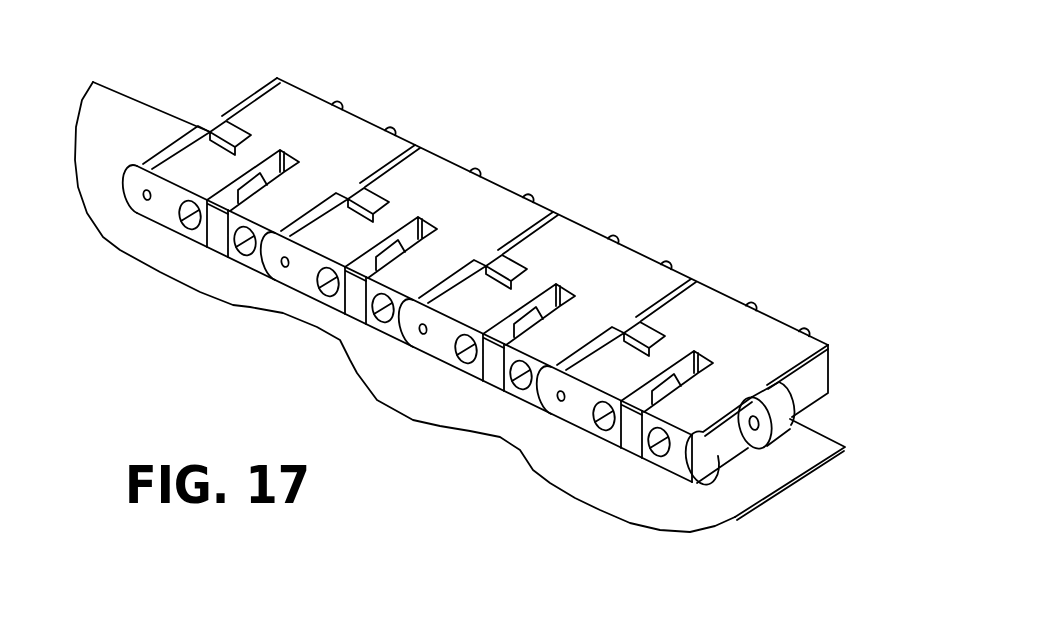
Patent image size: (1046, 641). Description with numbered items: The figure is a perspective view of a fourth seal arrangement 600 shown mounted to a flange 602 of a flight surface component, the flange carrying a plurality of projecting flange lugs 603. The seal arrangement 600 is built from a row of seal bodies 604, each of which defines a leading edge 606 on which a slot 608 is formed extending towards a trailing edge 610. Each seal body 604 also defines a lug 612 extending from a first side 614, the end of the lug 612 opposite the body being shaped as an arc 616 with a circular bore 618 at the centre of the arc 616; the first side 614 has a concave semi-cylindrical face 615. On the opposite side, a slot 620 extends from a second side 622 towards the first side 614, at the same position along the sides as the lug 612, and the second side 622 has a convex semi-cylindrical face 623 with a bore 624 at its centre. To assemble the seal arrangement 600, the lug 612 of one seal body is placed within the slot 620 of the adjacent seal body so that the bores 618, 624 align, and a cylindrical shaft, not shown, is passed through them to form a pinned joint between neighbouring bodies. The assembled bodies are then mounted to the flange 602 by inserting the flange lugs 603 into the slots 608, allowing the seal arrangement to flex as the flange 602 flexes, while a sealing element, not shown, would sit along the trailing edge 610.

The seal arrangement 600 is at (786, 130).
The flange 602 is at (600, 513).
The flange lug 603 is at (698, 367).
The seal body 604 is at (438, 287).
The leading edge 606 is at (572, 417).
The slot 608 is at (675, 362).
The trailing edge 610 is at (755, 378).
The lug 612 is at (765, 452).
The first side 614 is at (818, 375).
The concave semi-cylindrical face 615 is at (692, 481).
The arc 616 is at (788, 418).
The circular bore 618 is at (754, 431).
The slot 620 is at (232, 126).
The second side 622 is at (206, 165).
The convex semi-cylindrical face 623 is at (283, 84).
The bore 624 is at (143, 199).